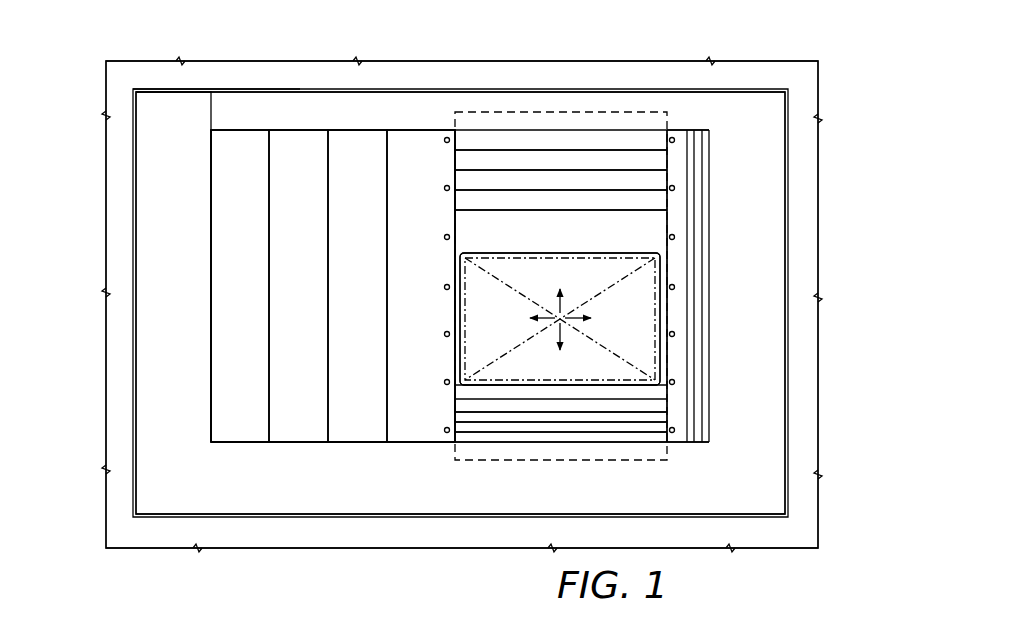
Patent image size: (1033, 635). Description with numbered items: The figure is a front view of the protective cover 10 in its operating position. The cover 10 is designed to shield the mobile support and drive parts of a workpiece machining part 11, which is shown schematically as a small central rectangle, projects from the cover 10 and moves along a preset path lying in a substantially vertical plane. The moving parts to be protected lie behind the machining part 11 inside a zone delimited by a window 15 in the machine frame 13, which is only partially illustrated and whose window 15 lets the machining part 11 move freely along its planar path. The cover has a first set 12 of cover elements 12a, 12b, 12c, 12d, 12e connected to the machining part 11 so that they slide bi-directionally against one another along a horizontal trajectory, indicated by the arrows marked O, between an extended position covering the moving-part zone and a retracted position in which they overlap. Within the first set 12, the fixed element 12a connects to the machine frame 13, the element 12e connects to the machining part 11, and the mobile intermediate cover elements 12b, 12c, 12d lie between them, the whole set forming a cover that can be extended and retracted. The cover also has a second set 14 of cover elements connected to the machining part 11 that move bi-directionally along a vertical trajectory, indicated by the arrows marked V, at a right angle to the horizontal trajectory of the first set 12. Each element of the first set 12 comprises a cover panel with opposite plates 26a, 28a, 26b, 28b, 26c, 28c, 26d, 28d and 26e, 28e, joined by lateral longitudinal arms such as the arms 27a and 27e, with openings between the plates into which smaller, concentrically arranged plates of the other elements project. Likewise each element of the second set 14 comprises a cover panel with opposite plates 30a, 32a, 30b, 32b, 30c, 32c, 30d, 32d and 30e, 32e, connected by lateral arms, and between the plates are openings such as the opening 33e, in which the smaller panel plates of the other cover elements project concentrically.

The protective cover 10 is at (138, 86).
The machining part 11 is at (600, 276).
The first set of cover elements 12 is at (316, 121).
The fixed cover element 12a is at (175, 112).
The mobile intermediate cover element 12b is at (139, 84).
The mobile intermediate cover element 12c is at (304, 140).
The mobile intermediate cover element 12d is at (353, 140).
The cover element for connection to the machining part 12e is at (402, 143).
The machine frame 13 is at (668, 152).
The second set of cover elements 14 is at (659, 136).
The window 15 is at (236, 148).
The plate 26a is at (168, 153).
The plate 26b is at (243, 215).
The plate 26c is at (300, 273).
The plate 26d is at (358, 320).
The plate 26e is at (400, 365).
The lateral longitudinal arm 27a is at (465, 102).
The lateral longitudinal arm 27e is at (493, 122).
The plate 28a is at (755, 203).
The plate 28b is at (705, 188).
The plate 28c is at (698, 175).
The plate 28d is at (692, 160).
The plate 28e is at (786, 88).
The plate 30a is at (642, 435).
The plate 30b is at (643, 423).
The plate 30c is at (647, 413).
The plate 30d is at (640, 403).
The plate 30e is at (640, 393).
The plate 32a is at (537, 142).
The plate 32b is at (562, 158).
The plate 32c is at (580, 182).
The plate 32d is at (582, 207).
The plate 32e is at (580, 223).
The opening 33e is at (623, 252).